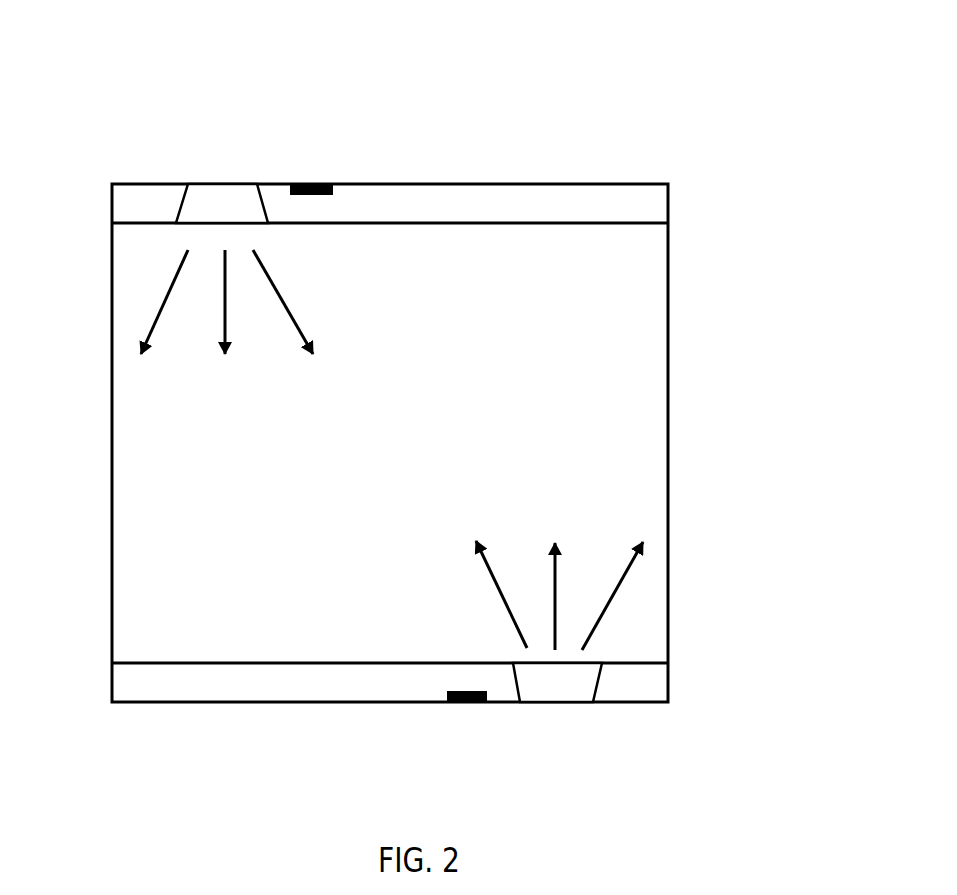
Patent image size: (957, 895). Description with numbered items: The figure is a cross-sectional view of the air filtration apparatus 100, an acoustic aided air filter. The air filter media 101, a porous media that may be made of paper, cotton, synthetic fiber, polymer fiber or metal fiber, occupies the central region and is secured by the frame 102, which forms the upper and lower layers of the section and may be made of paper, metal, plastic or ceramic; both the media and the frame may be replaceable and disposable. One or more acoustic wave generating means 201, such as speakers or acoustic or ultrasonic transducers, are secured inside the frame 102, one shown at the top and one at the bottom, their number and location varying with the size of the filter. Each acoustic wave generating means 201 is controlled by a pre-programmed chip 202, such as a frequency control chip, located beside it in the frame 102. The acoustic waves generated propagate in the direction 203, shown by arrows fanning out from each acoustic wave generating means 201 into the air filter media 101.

The air filtration apparatus 100 is at (138, 86).
The air filter media 101 is at (148, 302).
The frame 102 is at (642, 211).
The acoustic wave generating means 201 is at (228, 200).
The pre-programmed chip 202 is at (318, 184).
The direction 203 is at (615, 598).